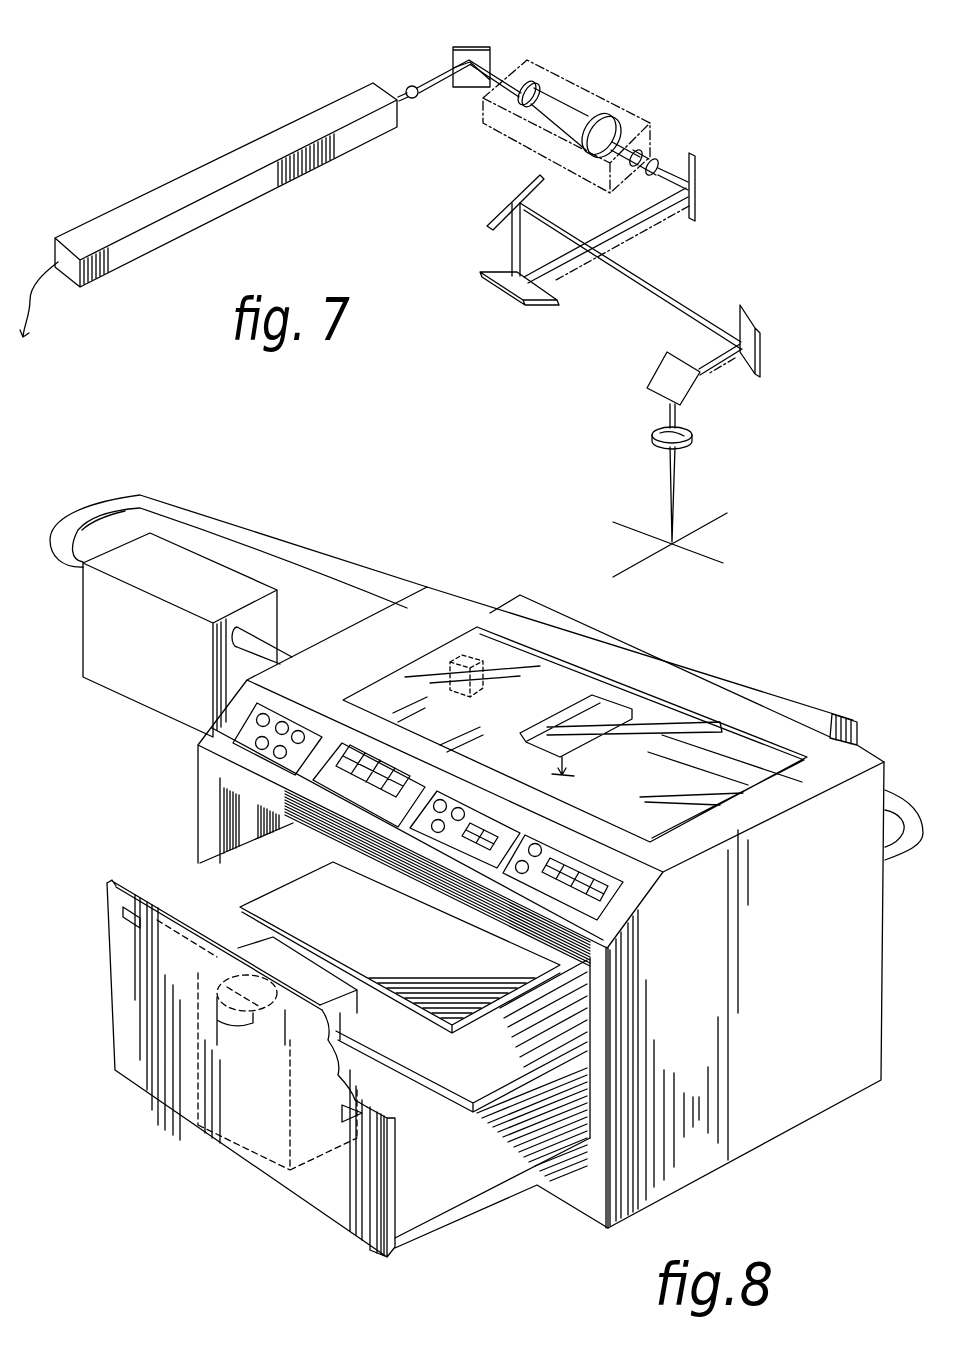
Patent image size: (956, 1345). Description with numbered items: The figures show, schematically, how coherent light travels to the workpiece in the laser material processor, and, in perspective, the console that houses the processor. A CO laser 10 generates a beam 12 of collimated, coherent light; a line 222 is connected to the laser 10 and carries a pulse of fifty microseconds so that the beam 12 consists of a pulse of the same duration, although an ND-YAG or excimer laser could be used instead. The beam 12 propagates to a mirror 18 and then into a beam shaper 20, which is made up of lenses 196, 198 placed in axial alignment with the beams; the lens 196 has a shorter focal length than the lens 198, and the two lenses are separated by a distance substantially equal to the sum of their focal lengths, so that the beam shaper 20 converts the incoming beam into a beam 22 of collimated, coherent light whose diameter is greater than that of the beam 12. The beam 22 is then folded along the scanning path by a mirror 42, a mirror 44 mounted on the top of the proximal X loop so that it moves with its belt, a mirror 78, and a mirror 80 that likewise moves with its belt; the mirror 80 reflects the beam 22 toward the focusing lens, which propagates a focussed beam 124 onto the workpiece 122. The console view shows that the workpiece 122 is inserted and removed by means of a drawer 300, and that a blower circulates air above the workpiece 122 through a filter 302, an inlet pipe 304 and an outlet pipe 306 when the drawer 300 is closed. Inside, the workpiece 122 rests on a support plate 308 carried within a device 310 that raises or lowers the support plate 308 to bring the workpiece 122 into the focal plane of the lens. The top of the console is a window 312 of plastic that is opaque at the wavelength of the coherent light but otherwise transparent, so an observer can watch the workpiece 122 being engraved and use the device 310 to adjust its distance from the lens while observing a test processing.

In FIG. 7, the CO laser 10 is at (207, 223).
In FIG. 7, the beam 12 is at (413, 86).
In FIG. 7, the mirror 18 is at (484, 47).
In FIG. 7, the lens 196 is at (532, 82).
In FIG. 7, the beam shaper 20 is at (587, 83).
In FIG. 7, the lens 198 is at (613, 113).
In FIG. 7, the beam 22 is at (658, 157).
In FIG. 7, the mirror 42 is at (697, 177).
In FIG. 7, the mirror 78 is at (507, 192).
In FIG. 7, the mirror 44 is at (530, 301).
In FIG. 7, the mirror 80 is at (762, 342).
In FIG. 7, the focussed beam 124 is at (677, 535).
In FIG. 7, the workpiece 122 is at (682, 543).
In FIG. 8, the workpiece 122 is at (399, 925).
In FIG. 7, the line 222 is at (67, 350).
In FIG. 8, the drawer 300 is at (110, 1003).
In FIG. 8, the filter 302 is at (178, 586).
In FIG. 8, the inlet pipe 304 is at (280, 643).
In FIG. 8, the outlet pipe 306 is at (270, 542).
In FIG. 8, the support plate 308 is at (490, 1068).
In FIG. 8, the device 310 is at (253, 938).
In FIG. 8, the window 312 is at (490, 714).